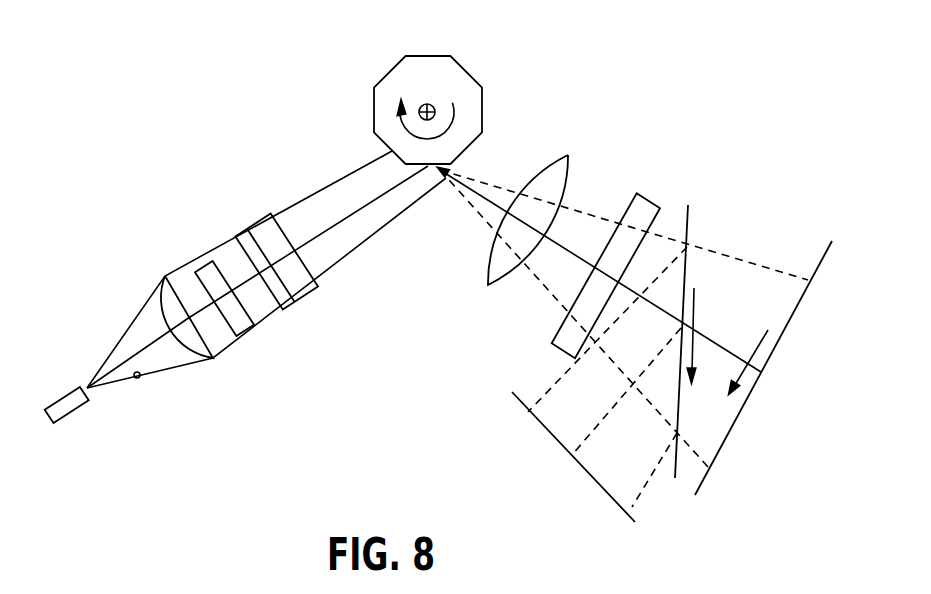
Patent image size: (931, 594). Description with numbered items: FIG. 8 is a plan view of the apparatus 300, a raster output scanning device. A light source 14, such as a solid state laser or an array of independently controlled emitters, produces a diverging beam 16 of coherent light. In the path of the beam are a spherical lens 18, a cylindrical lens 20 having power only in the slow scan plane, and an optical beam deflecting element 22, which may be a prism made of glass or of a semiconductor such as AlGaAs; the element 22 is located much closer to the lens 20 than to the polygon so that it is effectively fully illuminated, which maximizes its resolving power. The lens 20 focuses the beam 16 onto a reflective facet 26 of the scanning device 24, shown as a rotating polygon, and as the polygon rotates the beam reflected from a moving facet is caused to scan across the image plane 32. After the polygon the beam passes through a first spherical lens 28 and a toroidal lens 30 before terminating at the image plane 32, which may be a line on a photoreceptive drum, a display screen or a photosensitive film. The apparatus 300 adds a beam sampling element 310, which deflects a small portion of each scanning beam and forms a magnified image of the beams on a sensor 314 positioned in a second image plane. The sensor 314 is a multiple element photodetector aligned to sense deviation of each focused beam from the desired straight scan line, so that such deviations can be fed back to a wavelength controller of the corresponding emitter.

The apparatus 300 is at (232, 149).
The light source 14 is at (65, 400).
The beam 16 is at (138, 380).
The spherical lens 18 is at (163, 290).
The cylindrical lens 20 is at (208, 263).
The optical beam deflecting element 22 is at (258, 220).
The scanning device 24 is at (447, 77).
The reflective facet 26 is at (452, 168).
The first spherical lens 28 is at (567, 158).
The toroidal lens 30 is at (645, 197).
The beam sampling element 310 is at (687, 222).
The image plane 32 is at (806, 287).
The sensor 314 is at (558, 441).